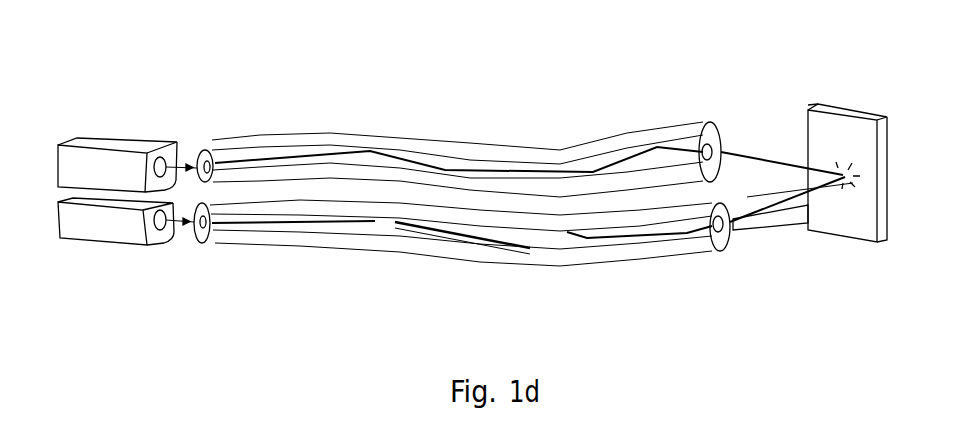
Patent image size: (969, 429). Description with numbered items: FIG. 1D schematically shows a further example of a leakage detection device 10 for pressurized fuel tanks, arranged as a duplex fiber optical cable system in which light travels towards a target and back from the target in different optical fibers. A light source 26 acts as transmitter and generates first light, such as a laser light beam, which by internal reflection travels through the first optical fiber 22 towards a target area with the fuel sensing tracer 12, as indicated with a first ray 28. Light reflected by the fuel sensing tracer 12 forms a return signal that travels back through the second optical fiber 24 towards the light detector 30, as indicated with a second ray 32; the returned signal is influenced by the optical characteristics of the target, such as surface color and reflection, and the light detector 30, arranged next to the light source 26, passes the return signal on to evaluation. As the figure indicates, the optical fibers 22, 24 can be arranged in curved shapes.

The leakage detection device 10 is at (683, 98).
The fuel sensing tracer 12 is at (845, 125).
The first optical fiber 22 is at (250, 133).
The second optical fiber 24 is at (227, 247).
The light source 26 is at (120, 132).
The first ray 28 is at (404, 153).
The light detector 30 is at (122, 250).
The second ray 32 is at (413, 222).